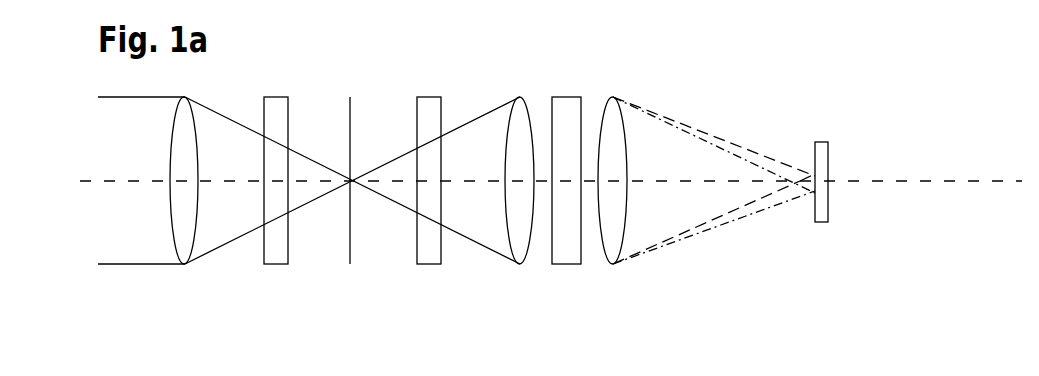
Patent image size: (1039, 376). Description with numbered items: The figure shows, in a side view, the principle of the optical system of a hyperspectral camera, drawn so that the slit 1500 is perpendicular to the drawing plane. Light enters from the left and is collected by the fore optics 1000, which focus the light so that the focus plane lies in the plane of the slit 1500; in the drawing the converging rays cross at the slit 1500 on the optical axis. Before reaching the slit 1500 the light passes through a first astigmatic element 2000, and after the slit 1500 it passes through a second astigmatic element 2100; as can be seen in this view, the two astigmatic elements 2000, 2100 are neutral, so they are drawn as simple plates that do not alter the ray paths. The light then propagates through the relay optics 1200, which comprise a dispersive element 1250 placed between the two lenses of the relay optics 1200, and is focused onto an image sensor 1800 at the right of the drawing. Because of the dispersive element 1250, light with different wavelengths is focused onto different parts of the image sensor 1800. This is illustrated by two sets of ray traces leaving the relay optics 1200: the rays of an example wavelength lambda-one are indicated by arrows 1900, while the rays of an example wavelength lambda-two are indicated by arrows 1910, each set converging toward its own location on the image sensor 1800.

The fore optics 1000 is at (162, 204).
The first astigmatic element 2000 is at (272, 204).
The slit 1500 is at (349, 162).
The second astigmatic element 2100 is at (431, 204).
The relay optics 1200 is at (566, 200).
The dispersive element 1250 is at (560, 311).
The image sensor 1800 is at (816, 160).
The arrows indicating rays of wavelength lambda2 1910 is at (713, 189).
The arrows indicating rays of wavelength lambda1 1900 is at (737, 193).